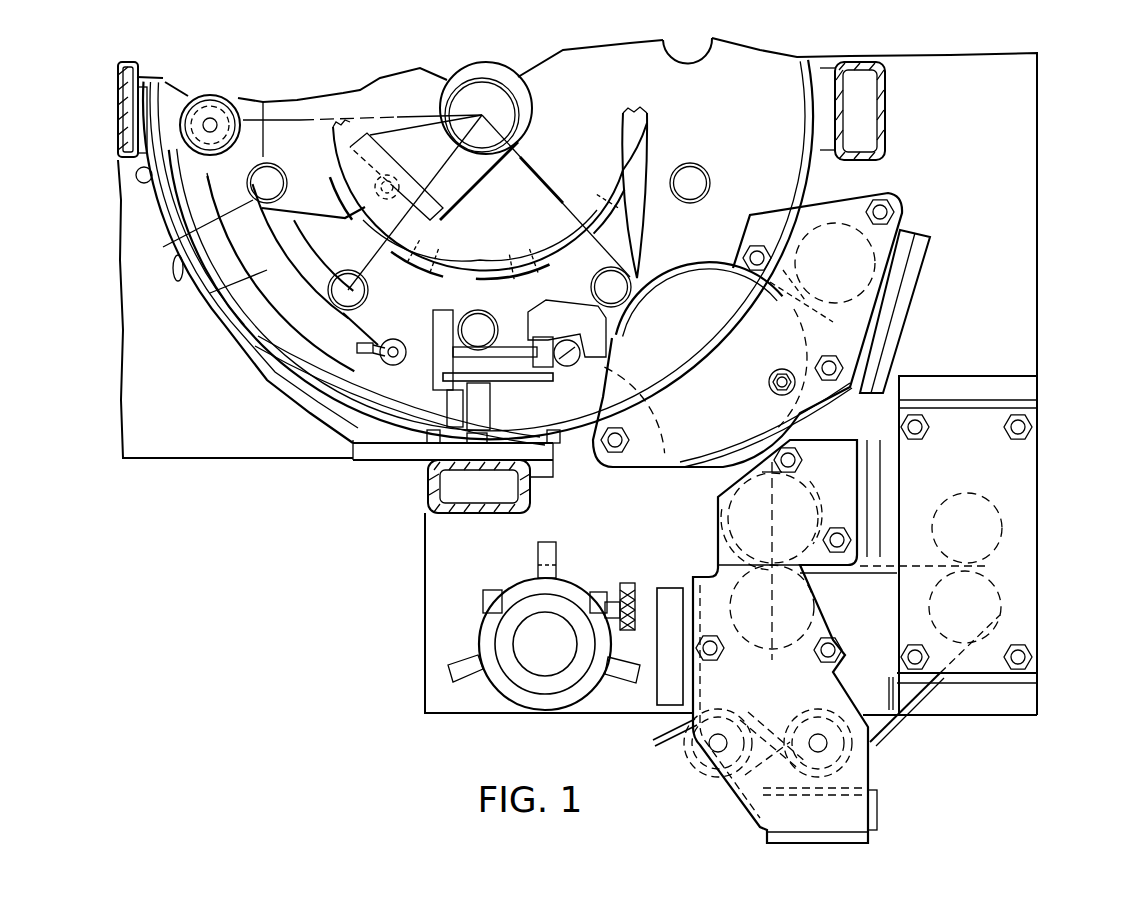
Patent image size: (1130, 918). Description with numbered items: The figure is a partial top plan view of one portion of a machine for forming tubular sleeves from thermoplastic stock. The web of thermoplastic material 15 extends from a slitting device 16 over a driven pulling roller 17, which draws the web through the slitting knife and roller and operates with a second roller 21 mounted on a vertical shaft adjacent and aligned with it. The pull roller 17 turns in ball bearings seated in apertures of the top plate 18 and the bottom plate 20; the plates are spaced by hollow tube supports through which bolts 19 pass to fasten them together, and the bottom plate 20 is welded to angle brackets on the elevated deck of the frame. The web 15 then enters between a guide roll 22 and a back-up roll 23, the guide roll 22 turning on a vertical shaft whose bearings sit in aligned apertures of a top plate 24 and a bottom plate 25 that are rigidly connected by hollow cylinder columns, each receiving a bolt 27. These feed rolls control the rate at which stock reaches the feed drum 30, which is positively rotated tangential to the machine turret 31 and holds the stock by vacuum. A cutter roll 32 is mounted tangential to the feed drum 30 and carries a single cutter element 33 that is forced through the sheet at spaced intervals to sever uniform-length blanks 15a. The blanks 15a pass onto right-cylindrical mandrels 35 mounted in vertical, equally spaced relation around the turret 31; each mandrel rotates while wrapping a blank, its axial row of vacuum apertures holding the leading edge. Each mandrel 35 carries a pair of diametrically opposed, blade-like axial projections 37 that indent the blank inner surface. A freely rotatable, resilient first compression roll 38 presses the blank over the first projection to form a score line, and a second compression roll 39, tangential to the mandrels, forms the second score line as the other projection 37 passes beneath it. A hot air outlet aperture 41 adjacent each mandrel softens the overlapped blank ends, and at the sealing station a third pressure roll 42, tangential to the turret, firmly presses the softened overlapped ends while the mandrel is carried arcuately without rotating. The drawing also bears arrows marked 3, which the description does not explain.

The section line 3- 3 is at (793, 435).
The web of thermoplastic material 15 is at (660, 748).
The blanks 15a is at (703, 262).
The slitting device 16 is at (795, 783).
The pulling roller 17 is at (990, 608).
The top plate 18 is at (1020, 522).
The bolts 19 is at (1032, 433).
The bottom plate 20 is at (1018, 697).
The second roller 21 is at (972, 512).
The guide roll 22 is at (808, 494).
The back-up roll 23 is at (812, 608).
The top plate 24 is at (703, 578).
The bottom plate 25 is at (874, 702).
The bolt 27 is at (837, 526).
The feed drum 30 is at (695, 423).
The machine turret 31 is at (714, 129).
The cutter roll 32 is at (820, 266).
The cutter element 33 is at (876, 311).
The mandrels 35 is at (273, 172).
The axial projections 37 is at (592, 290).
The first compression roll 38 is at (567, 367).
The second compression roll 39 is at (360, 345).
The hot air outlet aperture 41 is at (260, 218).
The third pressure roll 42 is at (213, 94).